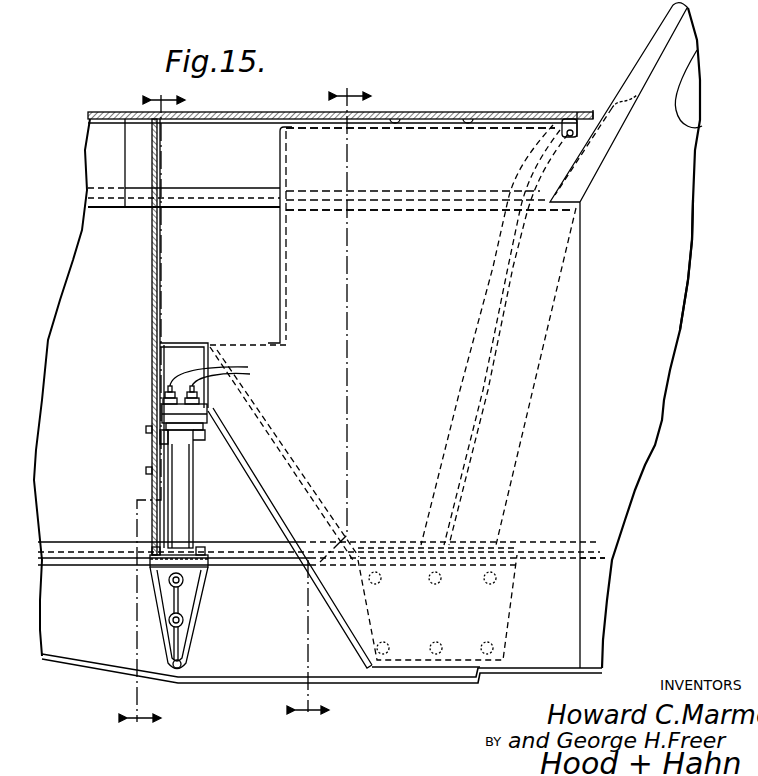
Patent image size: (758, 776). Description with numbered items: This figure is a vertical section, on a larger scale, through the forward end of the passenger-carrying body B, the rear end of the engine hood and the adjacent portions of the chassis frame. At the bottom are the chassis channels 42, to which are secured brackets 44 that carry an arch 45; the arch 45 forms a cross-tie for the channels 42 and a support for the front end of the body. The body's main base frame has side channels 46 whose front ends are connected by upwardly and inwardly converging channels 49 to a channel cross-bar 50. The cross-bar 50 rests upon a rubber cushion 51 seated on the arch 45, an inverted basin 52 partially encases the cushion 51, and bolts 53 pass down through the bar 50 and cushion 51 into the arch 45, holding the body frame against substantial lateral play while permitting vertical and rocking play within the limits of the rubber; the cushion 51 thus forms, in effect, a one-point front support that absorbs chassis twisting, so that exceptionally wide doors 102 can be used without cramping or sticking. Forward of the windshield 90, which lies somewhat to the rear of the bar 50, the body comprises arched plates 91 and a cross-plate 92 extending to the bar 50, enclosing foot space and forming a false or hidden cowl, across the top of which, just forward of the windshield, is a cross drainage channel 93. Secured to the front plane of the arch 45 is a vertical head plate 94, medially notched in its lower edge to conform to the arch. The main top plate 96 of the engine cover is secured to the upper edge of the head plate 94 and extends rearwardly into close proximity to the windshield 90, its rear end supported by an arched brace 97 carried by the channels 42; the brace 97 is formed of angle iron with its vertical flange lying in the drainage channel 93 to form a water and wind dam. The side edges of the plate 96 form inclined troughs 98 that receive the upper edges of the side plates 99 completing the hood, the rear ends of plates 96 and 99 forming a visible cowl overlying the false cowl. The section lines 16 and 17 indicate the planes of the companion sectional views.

The section line 16- 16 is at (151, 418).
The section line 17- 17 is at (329, 408).
The channels 42 is at (255, 674).
The brackets 44 is at (190, 600).
The arch 45 is at (194, 492).
The side channels 46 is at (606, 570).
The upwardly and inwardly converging channels 49 is at (280, 456).
The channel cross-bar 50 is at (196, 343).
The rubber cushion 51 is at (186, 431).
The inverted basin 52 is at (208, 411).
The bolts 53 is at (226, 373).
The windshield 90 is at (660, 36).
The arched plates 91 is at (420, 228).
The cross-plate 92 is at (283, 260).
The cross drainage channel 93 is at (562, 132).
The vertical head plate 94 is at (152, 258).
The main top plate 96 is at (268, 100).
The arched brace 97 is at (584, 112).
The troughs 98 is at (425, 206).
The side plates 99 is at (63, 387).
The doors 102 is at (672, 292).